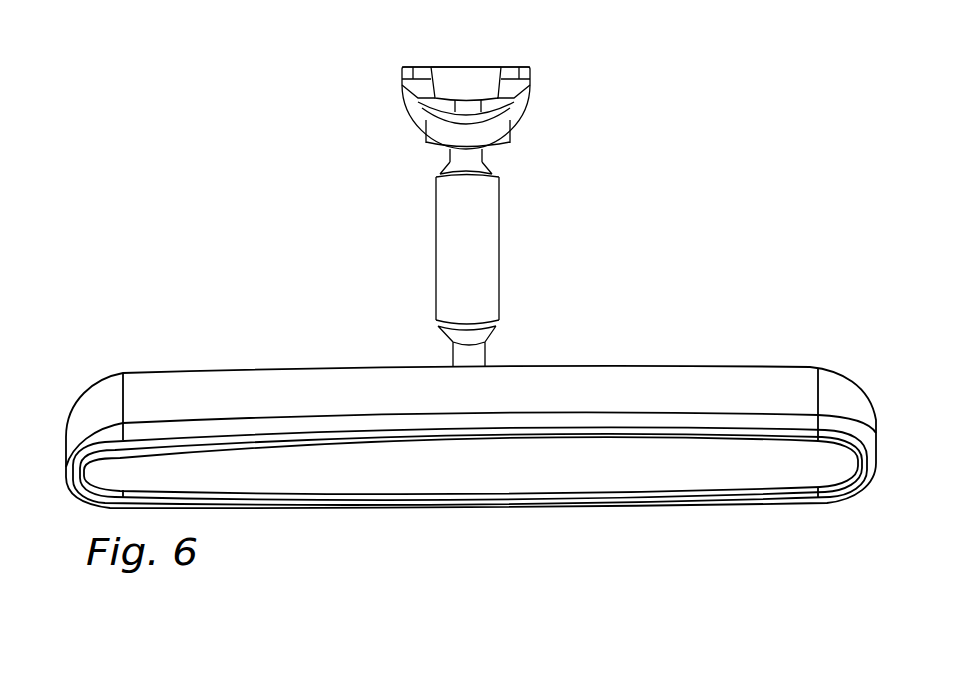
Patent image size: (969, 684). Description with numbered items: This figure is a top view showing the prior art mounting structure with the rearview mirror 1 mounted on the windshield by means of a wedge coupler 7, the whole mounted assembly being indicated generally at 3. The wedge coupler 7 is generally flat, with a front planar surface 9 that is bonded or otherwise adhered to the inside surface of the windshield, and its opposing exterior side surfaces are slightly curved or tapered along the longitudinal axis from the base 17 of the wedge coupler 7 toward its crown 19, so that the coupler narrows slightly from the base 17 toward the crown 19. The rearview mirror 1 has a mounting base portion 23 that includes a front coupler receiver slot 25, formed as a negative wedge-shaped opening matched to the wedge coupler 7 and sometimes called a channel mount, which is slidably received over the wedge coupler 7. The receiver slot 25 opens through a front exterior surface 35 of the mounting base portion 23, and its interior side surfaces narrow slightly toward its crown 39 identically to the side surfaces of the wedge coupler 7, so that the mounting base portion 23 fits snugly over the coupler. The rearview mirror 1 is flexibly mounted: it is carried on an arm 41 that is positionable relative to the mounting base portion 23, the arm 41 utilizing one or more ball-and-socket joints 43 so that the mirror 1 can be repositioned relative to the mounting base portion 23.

The rearview mirror 1 is at (207, 372).
The mirror mounting assembly 3 is at (392, 39).
The wedge coupler 7 is at (445, 67).
The front planar surface 9 is at (476, 91).
The base 17 is at (483, 63).
The crown 19 is at (468, 107).
The mounting base portion 23 is at (520, 128).
The coupler receiver slot 25 is at (450, 115).
The front exterior surface 35 is at (513, 70).
The crown 39 is at (457, 132).
The arm 41 is at (490, 260).
The ball-and-socket joint 43 is at (458, 178).